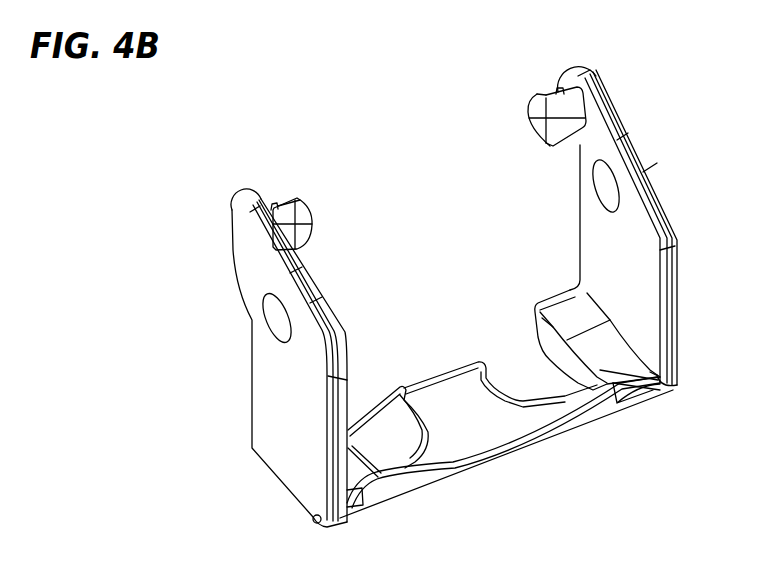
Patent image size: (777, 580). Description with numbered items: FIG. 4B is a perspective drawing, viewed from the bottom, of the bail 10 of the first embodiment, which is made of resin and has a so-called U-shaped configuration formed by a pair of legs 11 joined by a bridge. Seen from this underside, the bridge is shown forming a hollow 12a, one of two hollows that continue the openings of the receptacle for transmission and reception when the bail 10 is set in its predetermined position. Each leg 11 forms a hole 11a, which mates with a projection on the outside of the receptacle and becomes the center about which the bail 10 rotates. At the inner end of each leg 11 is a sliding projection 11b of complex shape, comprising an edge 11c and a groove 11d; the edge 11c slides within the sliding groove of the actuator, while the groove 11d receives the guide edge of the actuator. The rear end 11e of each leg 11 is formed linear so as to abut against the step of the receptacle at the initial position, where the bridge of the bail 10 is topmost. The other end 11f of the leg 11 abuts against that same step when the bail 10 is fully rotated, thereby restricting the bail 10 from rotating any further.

The bail 10 is at (662, 78).
The leg 11 is at (254, 411).
The hole 11a is at (253, 332).
The sliding projection 11b is at (313, 237).
The edge 11c is at (302, 202).
The groove 11d is at (273, 207).
The rear end 11e is at (342, 500).
The end 11f is at (240, 197).
The hollow 12a is at (386, 416).